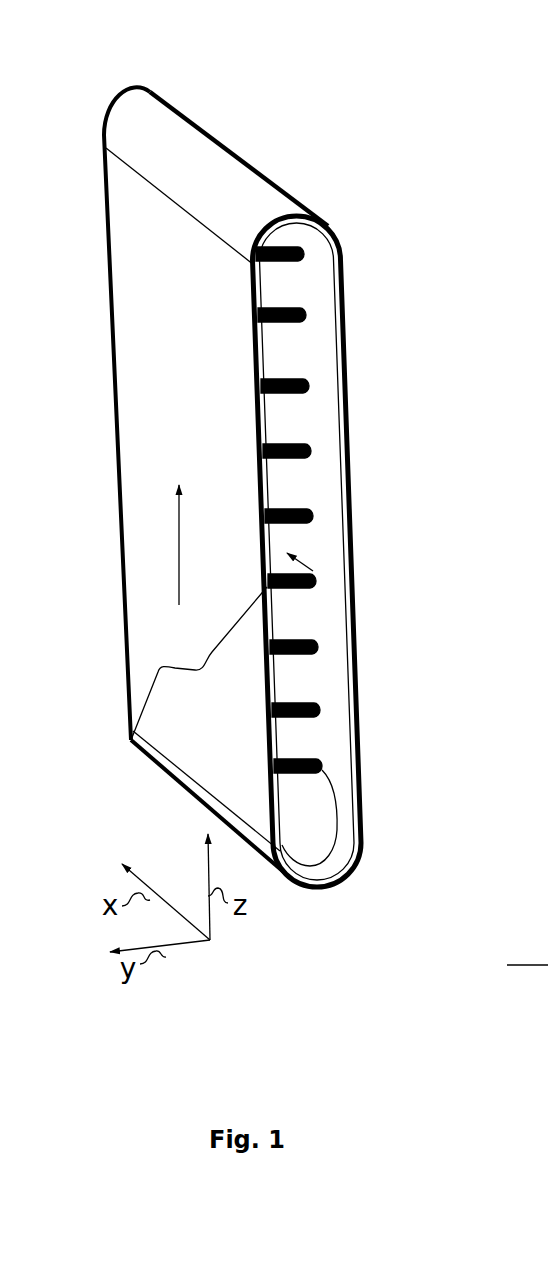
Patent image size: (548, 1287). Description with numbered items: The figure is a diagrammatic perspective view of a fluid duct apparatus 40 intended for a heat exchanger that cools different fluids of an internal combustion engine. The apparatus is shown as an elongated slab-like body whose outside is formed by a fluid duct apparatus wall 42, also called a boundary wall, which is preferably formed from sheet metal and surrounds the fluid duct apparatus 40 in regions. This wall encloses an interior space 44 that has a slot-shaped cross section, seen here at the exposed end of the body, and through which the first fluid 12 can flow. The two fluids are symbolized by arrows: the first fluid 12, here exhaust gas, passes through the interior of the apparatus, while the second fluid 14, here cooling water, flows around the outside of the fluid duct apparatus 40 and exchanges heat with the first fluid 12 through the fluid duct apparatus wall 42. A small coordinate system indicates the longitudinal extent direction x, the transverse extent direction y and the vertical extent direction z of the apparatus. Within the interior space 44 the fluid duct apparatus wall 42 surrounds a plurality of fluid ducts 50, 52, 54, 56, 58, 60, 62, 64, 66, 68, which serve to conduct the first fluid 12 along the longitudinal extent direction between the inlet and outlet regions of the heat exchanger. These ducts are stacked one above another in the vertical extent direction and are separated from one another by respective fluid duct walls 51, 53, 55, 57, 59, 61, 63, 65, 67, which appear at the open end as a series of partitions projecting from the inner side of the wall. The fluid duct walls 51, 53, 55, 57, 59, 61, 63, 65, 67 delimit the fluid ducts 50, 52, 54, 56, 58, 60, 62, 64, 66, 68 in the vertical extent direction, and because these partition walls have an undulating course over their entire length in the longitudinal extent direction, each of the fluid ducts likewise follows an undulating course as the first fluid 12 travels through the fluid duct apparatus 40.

The fluid duct apparatus 40 is at (217, 122).
The fluid duct apparatus wall 42 is at (237, 178).
The interior space 44 is at (362, 846).
The first fluid 12 is at (131, 740).
The second fluid 14 is at (178, 556).
The fluid duct 50 is at (297, 237).
The fluid duct wall 51 is at (290, 257).
The fluid duct 52 is at (292, 291).
The fluid duct wall 53 is at (292, 315).
The fluid duct 54 is at (300, 352).
The fluid duct wall 55 is at (295, 386).
The fluid duct 56 is at (300, 418).
The fluid duct wall 57 is at (297, 451).
The fluid duct 58 is at (306, 483).
The fluid duct wall 59 is at (300, 516).
The fluid duct 60 is at (307, 546).
The fluid duct wall 61 is at (302, 581).
The fluid duct 62 is at (312, 612).
The fluid duct wall 63 is at (305, 647).
The fluid duct 64 is at (312, 677).
The fluid duct wall 65 is at (307, 710).
The fluid duct 66 is at (317, 733).
The fluid duct wall 67 is at (309, 765).
The fluid duct 68 is at (342, 804).